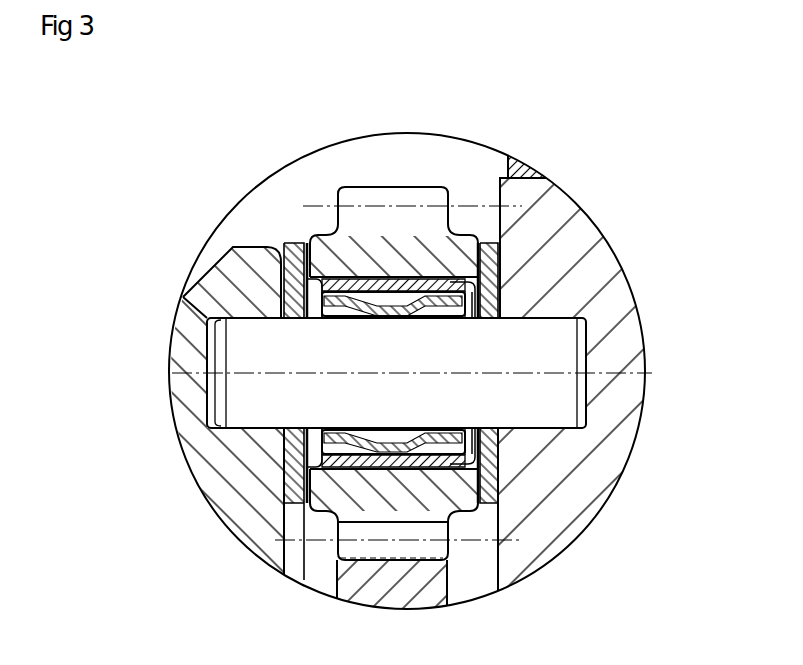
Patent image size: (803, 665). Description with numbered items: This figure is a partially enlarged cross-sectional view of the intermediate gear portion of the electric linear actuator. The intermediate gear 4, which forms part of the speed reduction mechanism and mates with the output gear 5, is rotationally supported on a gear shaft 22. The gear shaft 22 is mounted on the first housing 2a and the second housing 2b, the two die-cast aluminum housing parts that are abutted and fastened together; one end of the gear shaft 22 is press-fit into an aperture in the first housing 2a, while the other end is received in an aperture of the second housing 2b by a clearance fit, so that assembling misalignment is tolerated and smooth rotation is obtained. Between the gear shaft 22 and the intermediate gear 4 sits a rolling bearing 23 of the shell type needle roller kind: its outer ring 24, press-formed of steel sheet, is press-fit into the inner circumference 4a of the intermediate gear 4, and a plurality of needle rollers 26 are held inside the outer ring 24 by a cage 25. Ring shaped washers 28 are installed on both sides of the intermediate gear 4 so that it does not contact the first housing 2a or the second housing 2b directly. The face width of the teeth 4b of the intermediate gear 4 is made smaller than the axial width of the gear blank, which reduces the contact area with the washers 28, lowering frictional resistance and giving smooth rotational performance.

The first housing 2a is at (217, 293).
The second housing 2b is at (592, 270).
The intermediate gear 4 is at (445, 160).
The inner circumference 4a is at (323, 274).
The teeth 4b is at (387, 198).
The output gear 5 is at (430, 597).
The gear shaft 22 is at (242, 383).
The rolling bearing 23 is at (714, 422).
The outer ring 24 is at (468, 465).
The cage 25 is at (455, 446).
The needle rollers 26 is at (433, 431).
The washers 28 is at (290, 494).